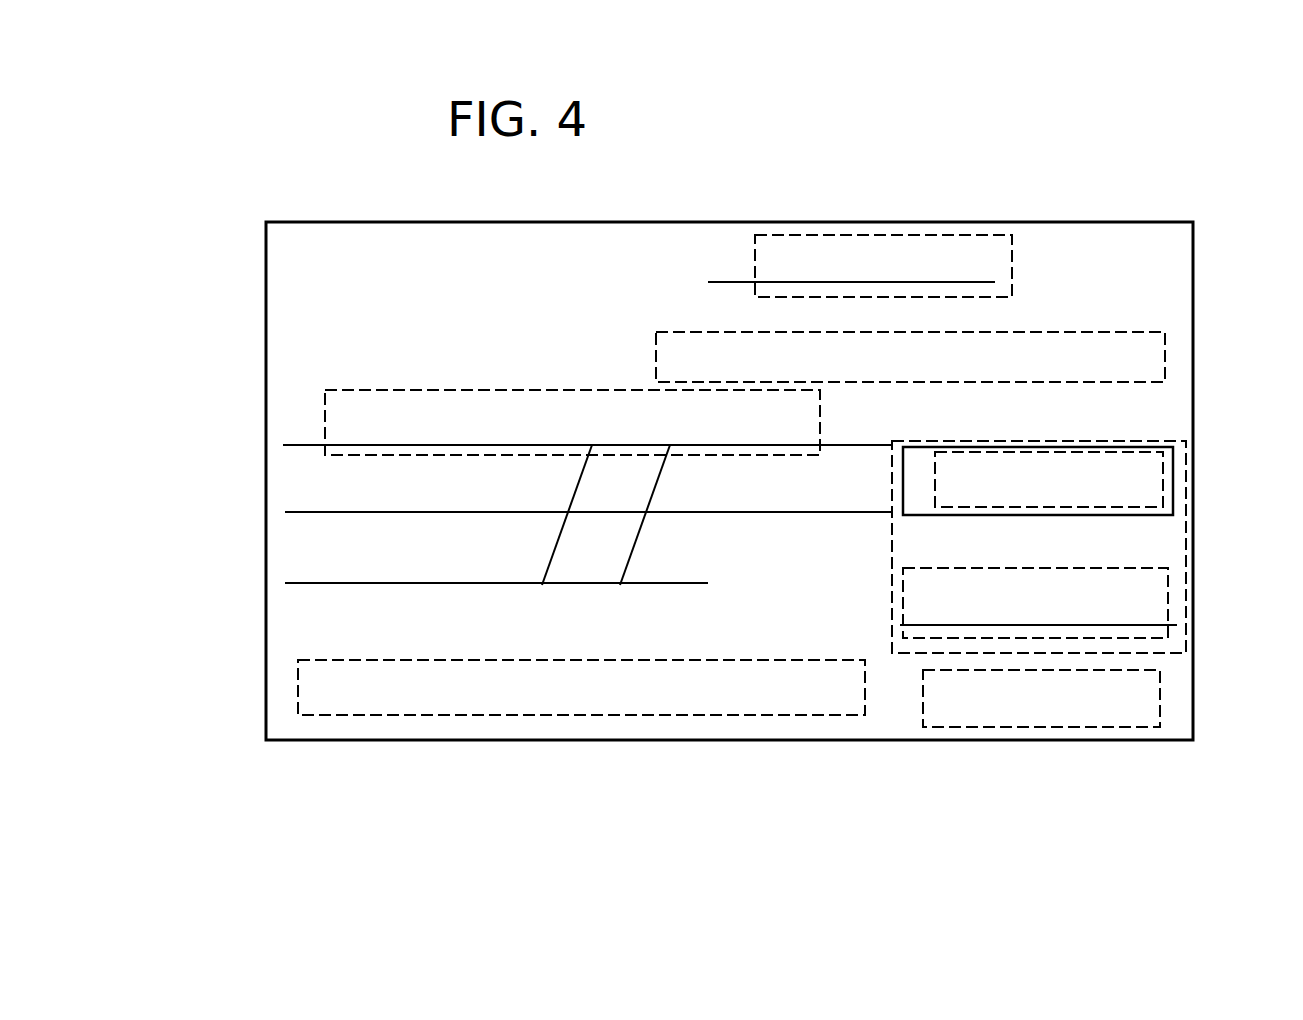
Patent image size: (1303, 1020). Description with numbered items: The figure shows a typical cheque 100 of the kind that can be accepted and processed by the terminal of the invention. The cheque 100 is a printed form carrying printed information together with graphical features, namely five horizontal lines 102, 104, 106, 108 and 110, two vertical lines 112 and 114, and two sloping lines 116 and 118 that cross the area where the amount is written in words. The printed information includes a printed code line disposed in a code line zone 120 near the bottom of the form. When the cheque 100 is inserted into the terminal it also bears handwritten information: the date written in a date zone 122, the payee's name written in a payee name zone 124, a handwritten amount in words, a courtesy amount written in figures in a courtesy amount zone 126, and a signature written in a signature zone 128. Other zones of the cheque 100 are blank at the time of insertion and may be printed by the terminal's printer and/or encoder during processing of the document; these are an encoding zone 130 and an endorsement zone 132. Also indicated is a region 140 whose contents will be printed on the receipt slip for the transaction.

The cheque 100 is at (237, 568).
The horizontal line 102 is at (952, 282).
The horizontal line 104 is at (1033, 445).
The horizontal line 106 is at (460, 518).
The horizontal line 108 is at (508, 587).
The horizontal line 110 is at (1120, 625).
The vertical line 112 is at (893, 453).
The vertical line 114 is at (1173, 495).
The sloping line 116 is at (552, 555).
The sloping line 118 is at (630, 553).
The code line zone 120 is at (547, 713).
The date zone 122 is at (877, 230).
The payee name zone 124 is at (500, 387).
The courtesy amount zone 126 is at (1165, 467).
The signature zone 128 is at (1168, 597).
The encoding zone 130 is at (1160, 693).
The endorsement zone 132 is at (1165, 357).
The region 140 is at (1188, 560).